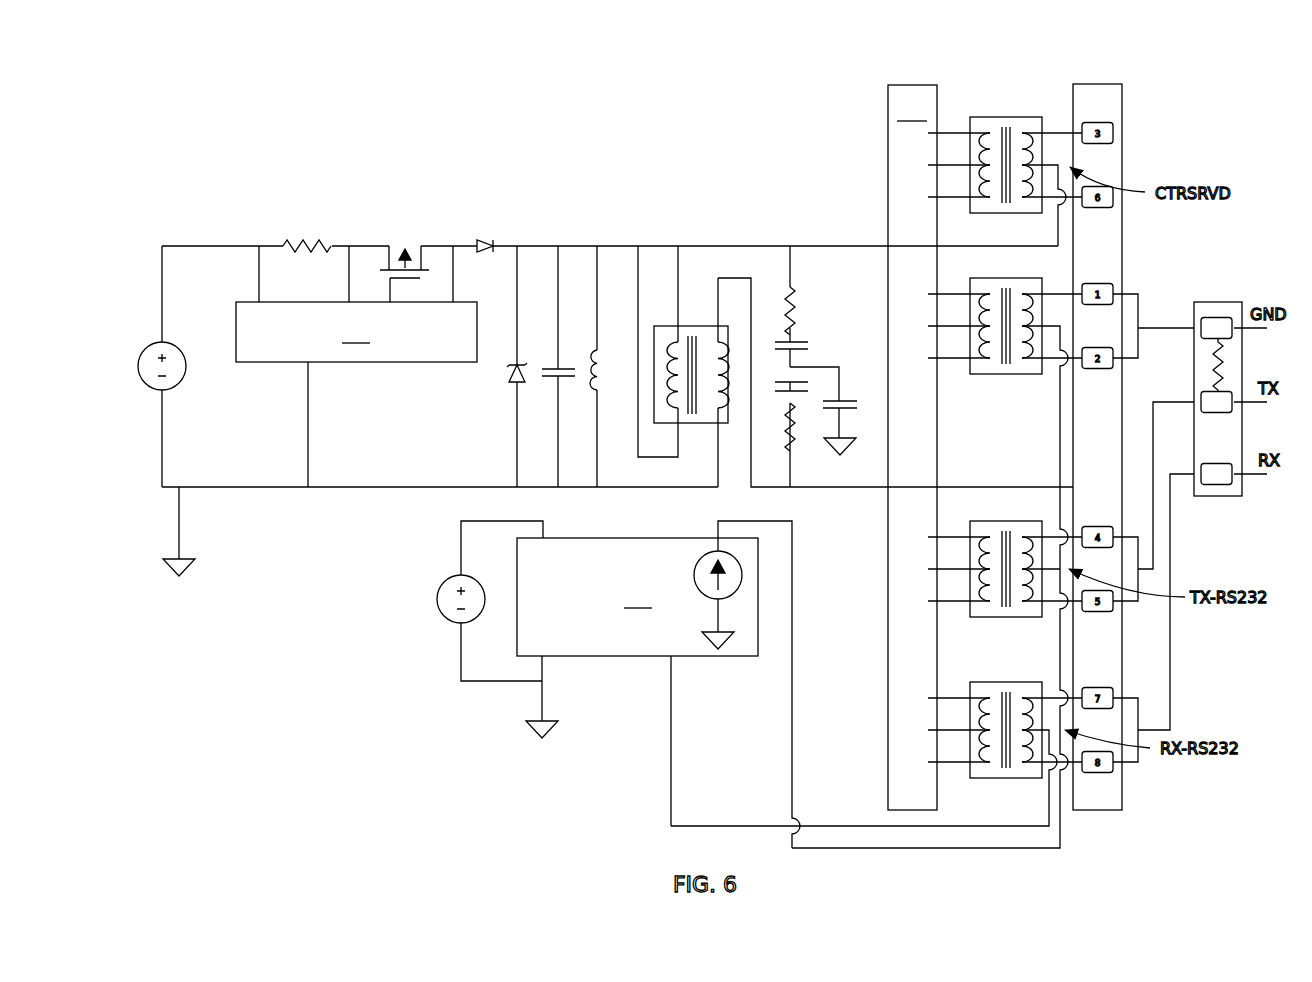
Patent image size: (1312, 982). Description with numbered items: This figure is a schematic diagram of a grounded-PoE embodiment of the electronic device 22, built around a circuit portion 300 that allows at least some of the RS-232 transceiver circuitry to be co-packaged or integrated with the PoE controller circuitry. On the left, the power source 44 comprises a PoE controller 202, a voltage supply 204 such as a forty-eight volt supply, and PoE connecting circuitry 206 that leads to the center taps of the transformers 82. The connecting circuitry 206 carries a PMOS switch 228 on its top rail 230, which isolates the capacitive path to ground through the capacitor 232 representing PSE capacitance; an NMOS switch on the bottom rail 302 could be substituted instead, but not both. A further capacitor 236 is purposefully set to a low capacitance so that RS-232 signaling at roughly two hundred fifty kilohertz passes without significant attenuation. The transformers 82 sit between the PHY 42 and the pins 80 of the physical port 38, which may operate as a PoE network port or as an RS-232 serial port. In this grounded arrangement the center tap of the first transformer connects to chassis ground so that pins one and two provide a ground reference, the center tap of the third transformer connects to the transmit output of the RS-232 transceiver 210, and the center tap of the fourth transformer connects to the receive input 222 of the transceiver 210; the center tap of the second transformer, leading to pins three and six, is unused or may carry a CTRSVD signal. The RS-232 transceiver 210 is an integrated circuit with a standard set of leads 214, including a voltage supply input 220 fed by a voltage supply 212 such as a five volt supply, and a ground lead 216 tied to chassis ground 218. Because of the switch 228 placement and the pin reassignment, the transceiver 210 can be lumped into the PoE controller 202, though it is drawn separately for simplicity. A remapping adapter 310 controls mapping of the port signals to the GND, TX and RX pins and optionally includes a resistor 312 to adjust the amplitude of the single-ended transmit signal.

The electronic device 22 is at (176, 124).
The circuit portion 300 is at (349, 122).
The power source 44 is at (224, 218).
The voltage supply 204 is at (182, 327).
The PoE controller 202 is at (356, 394).
The PMOS switch 228 is at (392, 226).
The top rail 230 is at (437, 246).
The PoE connecting circuitry 206 is at (508, 215).
The capacitor 232 is at (575, 345).
The bottom rail 302 is at (341, 489).
The capacitor 236 is at (850, 380).
The PHY 42 is at (887, 797).
The pins 80 is at (1118, 108).
The physical port 38 is at (1103, 811).
The transformers 82 is at (1030, 92).
The remapping adapter 310 is at (1228, 497).
The resistor 312 is at (1222, 302).
The RS-232 transceiver 210 is at (637, 597).
The voltage supply input 220 is at (540, 526).
The voltage supply 212 is at (438, 647).
The ground lead 216 is at (545, 660).
The chassis ground 218 is at (533, 728).
The receive input 222 is at (672, 670).
The leads 214 is at (594, 737).